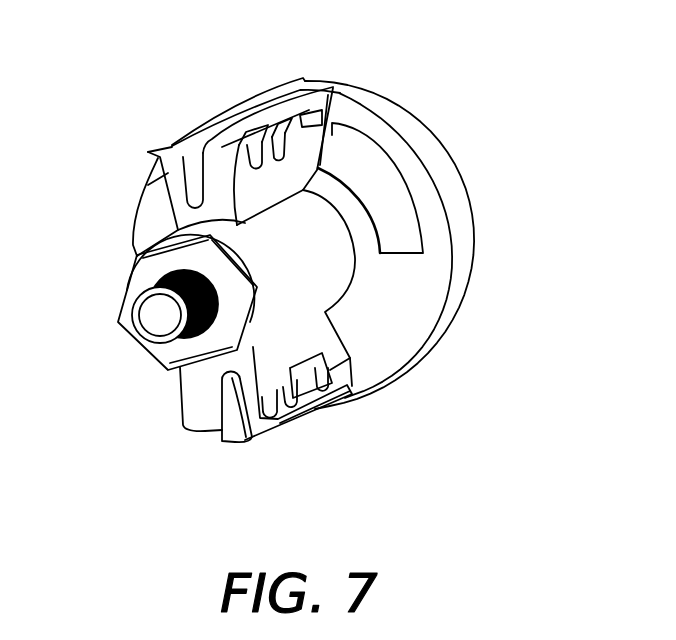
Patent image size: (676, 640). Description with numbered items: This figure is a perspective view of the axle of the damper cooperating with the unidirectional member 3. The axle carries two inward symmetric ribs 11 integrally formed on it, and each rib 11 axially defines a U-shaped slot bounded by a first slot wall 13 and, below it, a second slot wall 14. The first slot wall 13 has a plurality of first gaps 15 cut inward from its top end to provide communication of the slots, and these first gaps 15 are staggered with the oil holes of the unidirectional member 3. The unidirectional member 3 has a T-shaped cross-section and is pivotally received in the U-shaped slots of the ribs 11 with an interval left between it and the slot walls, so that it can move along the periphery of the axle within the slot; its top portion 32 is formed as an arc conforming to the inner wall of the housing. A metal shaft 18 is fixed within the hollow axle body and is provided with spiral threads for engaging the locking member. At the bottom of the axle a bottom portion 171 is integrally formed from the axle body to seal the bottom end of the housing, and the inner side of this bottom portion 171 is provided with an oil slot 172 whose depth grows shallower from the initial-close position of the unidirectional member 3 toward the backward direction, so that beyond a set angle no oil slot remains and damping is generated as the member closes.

The unidirectional member 3 is at (185, 168).
The rib 11 is at (205, 410).
The first slot wall 13 is at (287, 178).
The second slot wall 14 is at (168, 197).
The first gaps 15 is at (279, 145).
The metal shaft 18 is at (158, 316).
The top portion 32 is at (167, 148).
The bottom portion 171 is at (457, 225).
The oil slot 172 is at (377, 190).